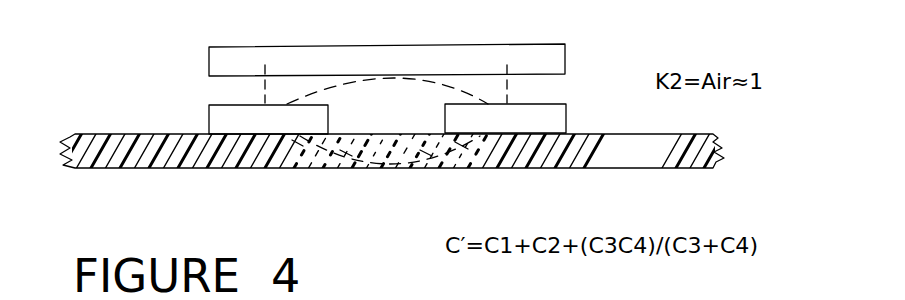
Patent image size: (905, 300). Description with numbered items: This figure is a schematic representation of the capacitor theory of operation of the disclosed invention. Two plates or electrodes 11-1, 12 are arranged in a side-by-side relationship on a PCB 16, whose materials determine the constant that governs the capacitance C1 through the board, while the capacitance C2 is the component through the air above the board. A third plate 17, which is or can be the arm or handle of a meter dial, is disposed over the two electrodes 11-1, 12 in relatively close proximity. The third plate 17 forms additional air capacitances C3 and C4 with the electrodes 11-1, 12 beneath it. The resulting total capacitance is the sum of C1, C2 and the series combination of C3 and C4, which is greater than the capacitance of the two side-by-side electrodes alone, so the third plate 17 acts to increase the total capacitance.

The third plate 17 is at (452, 52).
The electrode 12 is at (552, 122).
The first electrode 11-1 is at (228, 120).
The PCB 16 is at (133, 155).
The capacitance C1 is at (402, 158).
The capacitance C2 is at (327, 88).
The capacitance C3 is at (507, 88).
The capacitance C4 is at (265, 90).